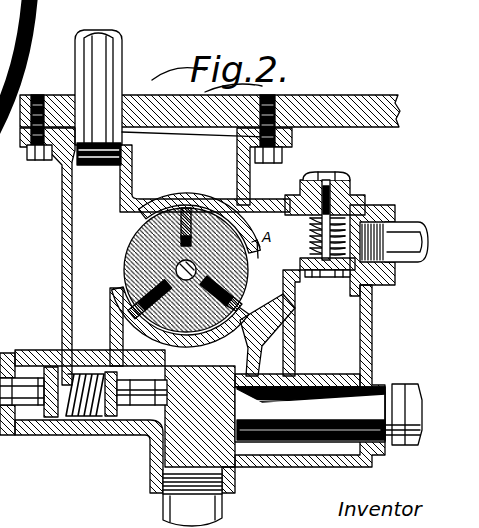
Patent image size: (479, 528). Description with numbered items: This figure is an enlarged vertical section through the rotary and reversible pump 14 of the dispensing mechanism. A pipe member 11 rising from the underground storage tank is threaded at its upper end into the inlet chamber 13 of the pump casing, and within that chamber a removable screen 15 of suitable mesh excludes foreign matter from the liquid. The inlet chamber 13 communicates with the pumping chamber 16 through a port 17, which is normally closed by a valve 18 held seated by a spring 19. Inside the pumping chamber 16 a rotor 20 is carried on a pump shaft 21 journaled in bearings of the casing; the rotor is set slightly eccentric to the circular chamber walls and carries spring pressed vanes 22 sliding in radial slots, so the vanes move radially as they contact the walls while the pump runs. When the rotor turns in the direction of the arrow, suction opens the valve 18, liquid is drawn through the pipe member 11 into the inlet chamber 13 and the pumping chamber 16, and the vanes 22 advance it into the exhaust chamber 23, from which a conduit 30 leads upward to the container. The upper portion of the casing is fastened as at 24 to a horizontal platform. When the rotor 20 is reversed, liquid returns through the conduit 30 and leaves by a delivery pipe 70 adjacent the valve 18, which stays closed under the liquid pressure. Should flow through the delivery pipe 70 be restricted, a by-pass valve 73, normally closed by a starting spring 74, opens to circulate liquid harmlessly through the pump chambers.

The pipe member 11 is at (172, 508).
The inlet chamber 13 is at (165, 452).
The rotary and reversible pump 14 is at (50, 272).
The removable screen 15 is at (285, 386).
The pumping chamber 16 is at (247, 268).
The port 17 is at (340, 281).
The valve 18 is at (368, 272).
The spring 19 is at (312, 237).
The rotor 20 is at (174, 270).
The pump shaft 21 is at (176, 272).
The spring pressed vanes 22 is at (128, 300).
The exhaust chamber 23 is at (155, 256).
The fastening 24 is at (45, 135).
The conduit 30 is at (118, 52).
The delivery pipe 70 is at (393, 222).
The by-pass valve 73 is at (90, 425).
The starting spring 74 is at (90, 385).